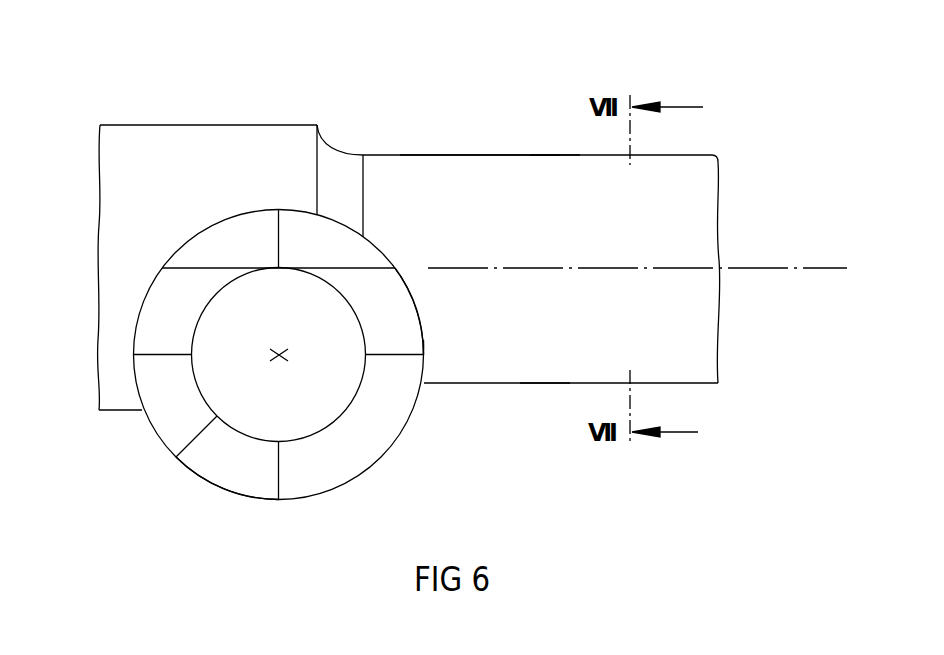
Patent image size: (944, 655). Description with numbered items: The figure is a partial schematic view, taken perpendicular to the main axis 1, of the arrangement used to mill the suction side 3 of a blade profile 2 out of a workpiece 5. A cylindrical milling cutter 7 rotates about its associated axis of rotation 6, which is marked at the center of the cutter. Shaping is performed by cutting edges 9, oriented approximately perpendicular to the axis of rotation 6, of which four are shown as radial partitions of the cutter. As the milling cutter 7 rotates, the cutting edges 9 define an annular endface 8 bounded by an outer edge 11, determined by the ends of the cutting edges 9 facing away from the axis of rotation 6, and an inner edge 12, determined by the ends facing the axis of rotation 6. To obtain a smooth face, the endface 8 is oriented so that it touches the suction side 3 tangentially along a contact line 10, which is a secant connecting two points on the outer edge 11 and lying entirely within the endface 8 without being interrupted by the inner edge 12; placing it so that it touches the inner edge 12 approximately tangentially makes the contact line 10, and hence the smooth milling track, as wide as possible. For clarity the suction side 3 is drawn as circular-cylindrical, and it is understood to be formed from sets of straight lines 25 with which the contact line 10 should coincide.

The main axis 1 is at (805, 270).
The blade profile 2 is at (718, 373).
The suction side 3 is at (482, 177).
The workpiece 5 is at (100, 394).
The axis of rotation 6 is at (272, 357).
The milling cutter 7 is at (367, 468).
The annular endface 8 is at (199, 437).
The cutting edges 9 is at (280, 243).
The contact line 10 is at (369, 270).
The outer edge 11 is at (424, 330).
The inner edge 12 is at (332, 285).
The straight lines 25 is at (552, 153).